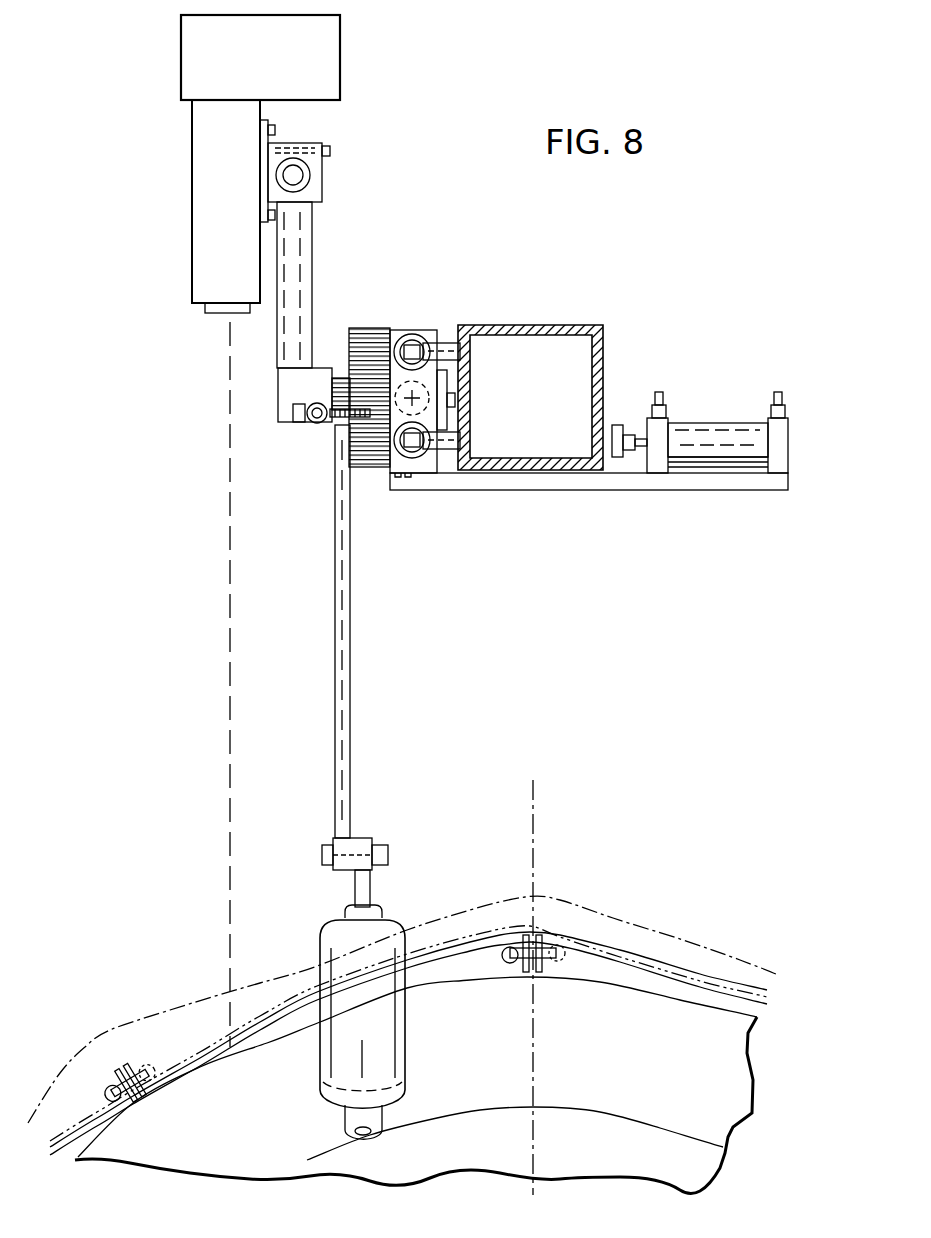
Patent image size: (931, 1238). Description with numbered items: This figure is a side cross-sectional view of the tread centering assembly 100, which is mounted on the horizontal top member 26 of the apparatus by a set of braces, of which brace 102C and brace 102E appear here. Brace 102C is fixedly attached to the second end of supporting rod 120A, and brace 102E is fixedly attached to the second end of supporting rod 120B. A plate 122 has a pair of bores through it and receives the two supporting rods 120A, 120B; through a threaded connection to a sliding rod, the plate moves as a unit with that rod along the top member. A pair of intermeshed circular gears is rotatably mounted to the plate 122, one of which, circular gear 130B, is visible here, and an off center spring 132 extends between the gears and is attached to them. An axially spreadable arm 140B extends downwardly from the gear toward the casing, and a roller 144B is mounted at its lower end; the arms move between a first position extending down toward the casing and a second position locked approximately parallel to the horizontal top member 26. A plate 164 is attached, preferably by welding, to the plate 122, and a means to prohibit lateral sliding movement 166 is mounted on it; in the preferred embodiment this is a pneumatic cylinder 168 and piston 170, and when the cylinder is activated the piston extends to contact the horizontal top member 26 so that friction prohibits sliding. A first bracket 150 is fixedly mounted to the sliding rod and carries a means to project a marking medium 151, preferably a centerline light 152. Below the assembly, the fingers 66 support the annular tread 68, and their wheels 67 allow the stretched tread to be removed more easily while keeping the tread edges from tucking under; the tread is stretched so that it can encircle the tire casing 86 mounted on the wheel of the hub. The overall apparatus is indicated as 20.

The tread strip building apparatus 20 is at (608, 347).
The horizontal top member 26 is at (560, 326).
The fingers 66 is at (152, 1080).
The wheels 67 is at (127, 1063).
The annular tread 68 is at (665, 930).
The tire casing 86 is at (208, 1077).
The tread centering assembly 100 is at (422, 308).
The brace 102C is at (447, 345).
The brace 102E is at (447, 450).
The supporting rod 120A is at (410, 334).
The supporting rod 120B is at (413, 458).
The plate 122 is at (430, 330).
The circular gear 130B is at (367, 328).
The off center spring 132 is at (313, 425).
The axially spreadable arm 140B is at (350, 688).
The roller 144B is at (386, 1030).
The first bracket 150 is at (313, 238).
The means to project a marking medium 151 is at (342, 62).
The centerline light 152 is at (340, 33).
The plate 164 is at (573, 490).
The means to prohibit lateral sliding movement 166 is at (690, 425).
The pneumatic cylinder 168 is at (733, 423).
The piston 170 is at (615, 425).